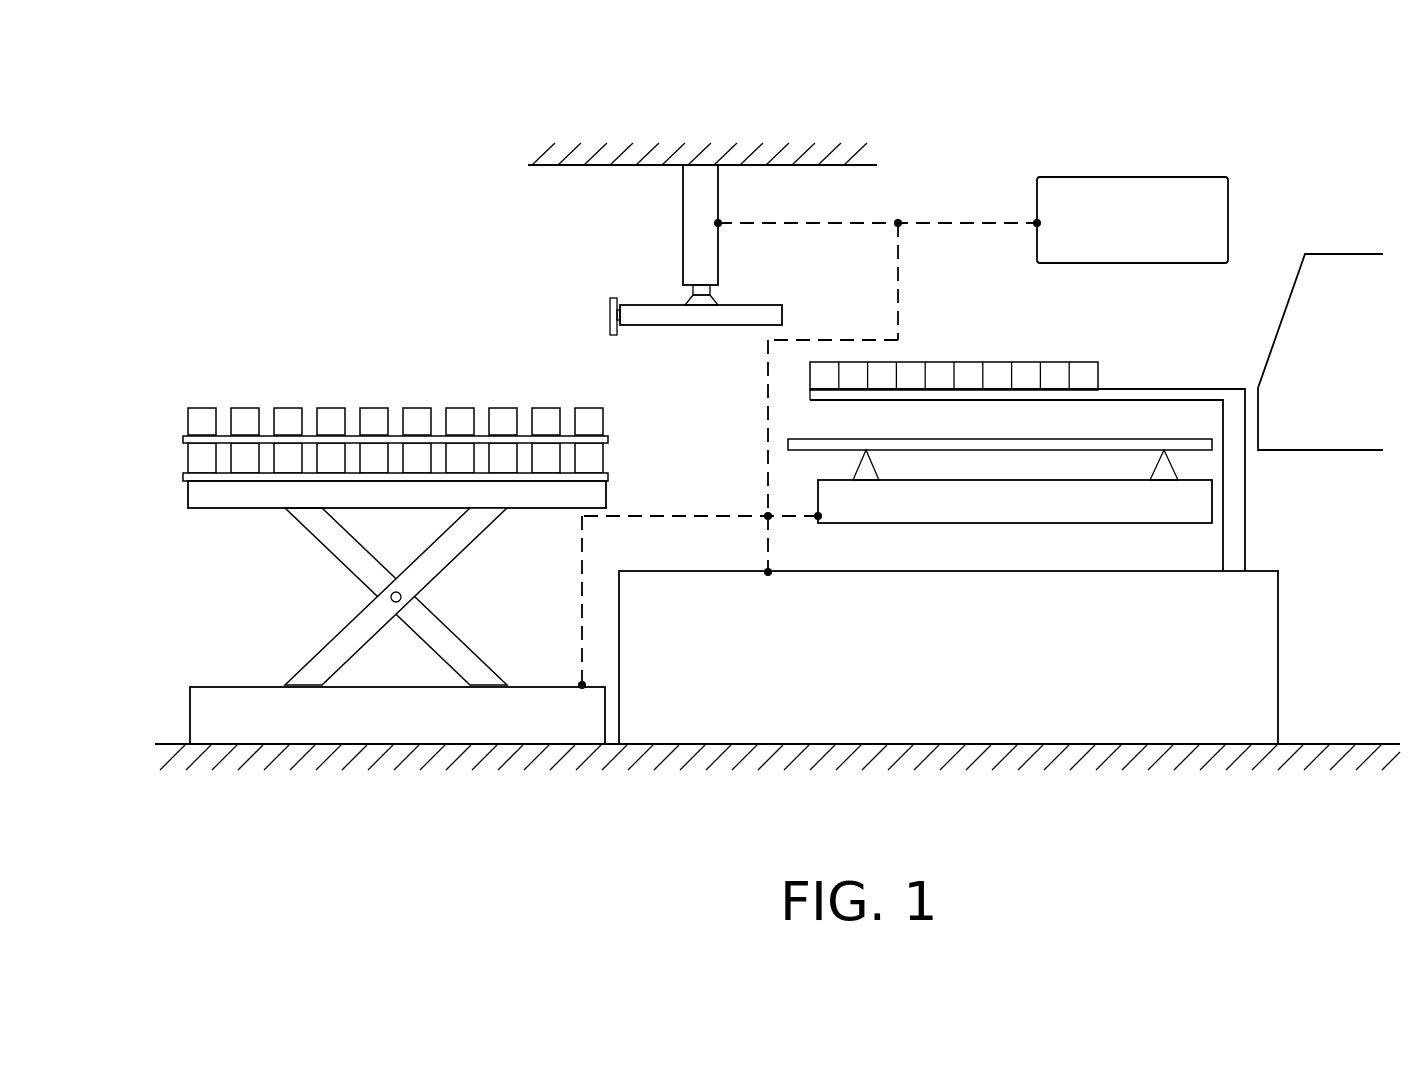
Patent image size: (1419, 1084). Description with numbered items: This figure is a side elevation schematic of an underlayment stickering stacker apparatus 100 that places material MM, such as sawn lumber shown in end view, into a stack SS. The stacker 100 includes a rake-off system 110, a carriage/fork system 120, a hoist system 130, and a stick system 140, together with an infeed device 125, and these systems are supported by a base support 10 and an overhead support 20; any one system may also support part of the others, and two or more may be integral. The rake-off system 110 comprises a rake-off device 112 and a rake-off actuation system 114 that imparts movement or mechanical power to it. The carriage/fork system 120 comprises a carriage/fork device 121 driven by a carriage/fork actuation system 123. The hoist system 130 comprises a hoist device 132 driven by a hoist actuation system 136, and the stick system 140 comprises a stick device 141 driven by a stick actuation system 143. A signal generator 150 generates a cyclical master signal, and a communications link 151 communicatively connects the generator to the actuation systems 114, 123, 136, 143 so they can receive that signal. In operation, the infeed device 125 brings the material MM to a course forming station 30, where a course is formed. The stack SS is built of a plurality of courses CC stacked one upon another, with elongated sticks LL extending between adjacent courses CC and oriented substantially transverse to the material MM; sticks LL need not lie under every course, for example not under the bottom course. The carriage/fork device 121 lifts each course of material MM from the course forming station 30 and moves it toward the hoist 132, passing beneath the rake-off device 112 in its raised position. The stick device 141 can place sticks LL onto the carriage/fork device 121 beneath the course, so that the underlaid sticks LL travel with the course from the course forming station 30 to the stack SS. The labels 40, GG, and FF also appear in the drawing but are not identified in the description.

The underlayment stickering stacker apparatus 100 is at (388, 118).
The base support 10 is at (1315, 737).
The overhead support 20 is at (803, 167).
The course forming station 30 is at (1190, 328).
The first substrate stack 40 is at (309, 312).
The rake-off system 110 is at (765, 270).
The rake-off device 112 is at (652, 312).
The rake-off actuation system 114 is at (693, 208).
The carriage/fork system 120 is at (1282, 544).
The carriage/fork device 121 is at (1238, 482).
The carriage/fork actuation system 123 is at (1265, 645).
The infeed device 125 is at (1337, 265).
The hoist system 130 is at (208, 581).
The hoist device 132 is at (193, 497).
The hoist actuation system 136 is at (244, 696).
The stick system 140 is at (1013, 536).
The stick device 141 is at (856, 470).
The stick actuation system 143 is at (1133, 517).
The signal generator 150 is at (1093, 182).
The communications link 151 is at (968, 225).
The stack SS is at (196, 394).
The gaps GG is at (310, 410).
The material MM is at (452, 410).
The courses CC is at (180, 423).
The sticks LL is at (608, 439).
The feed direction FF is at (636, 388).